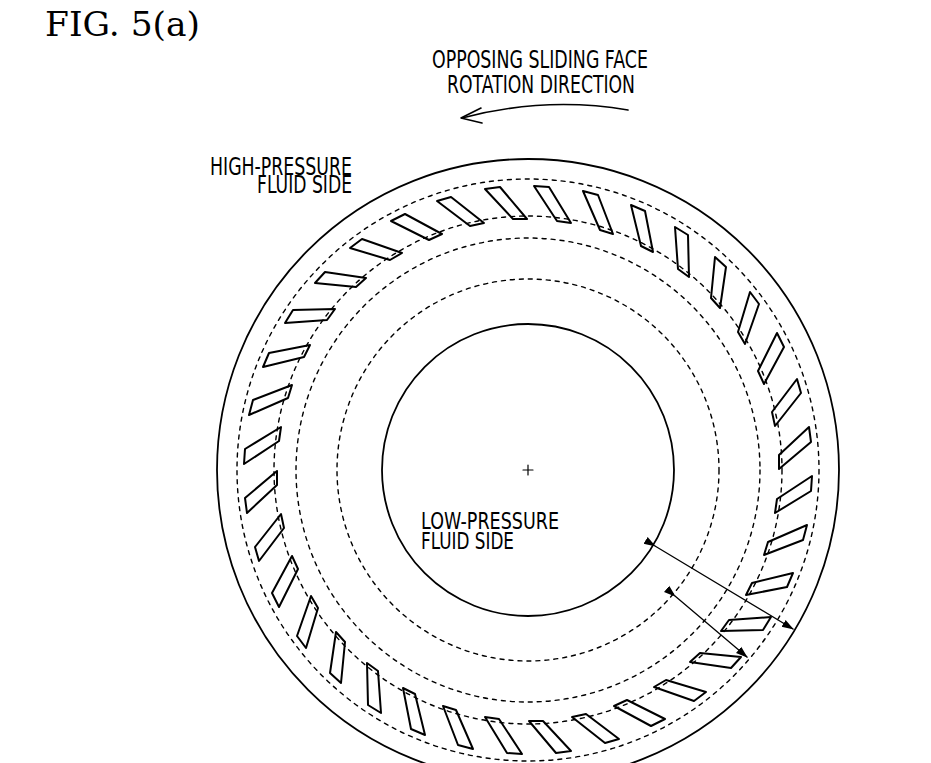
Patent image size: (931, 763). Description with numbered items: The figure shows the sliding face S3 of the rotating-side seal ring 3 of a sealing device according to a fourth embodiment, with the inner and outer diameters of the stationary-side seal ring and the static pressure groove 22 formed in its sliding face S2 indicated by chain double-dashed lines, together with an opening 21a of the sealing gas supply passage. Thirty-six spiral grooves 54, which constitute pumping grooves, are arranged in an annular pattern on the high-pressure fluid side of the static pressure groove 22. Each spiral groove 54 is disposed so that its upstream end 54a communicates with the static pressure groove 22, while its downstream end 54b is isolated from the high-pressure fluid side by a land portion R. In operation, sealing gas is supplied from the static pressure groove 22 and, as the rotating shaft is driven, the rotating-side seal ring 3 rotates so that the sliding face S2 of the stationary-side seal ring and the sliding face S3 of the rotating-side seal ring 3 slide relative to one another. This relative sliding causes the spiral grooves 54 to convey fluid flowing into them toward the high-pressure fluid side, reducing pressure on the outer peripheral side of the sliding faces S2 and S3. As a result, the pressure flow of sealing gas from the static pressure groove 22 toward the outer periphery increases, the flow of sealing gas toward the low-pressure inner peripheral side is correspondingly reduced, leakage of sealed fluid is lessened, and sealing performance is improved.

The rotating-side seal ring 3 is at (680, 195).
The opening of sealing gas supply passage 21a is at (563, 219).
The static pressure groove 22 is at (708, 240).
The land portion R is at (444, 197).
The spiral groove 54 is at (493, 470).
The upstream end of spiral groove 54a is at (366, 277).
The downstream end of spiral groove 54b is at (322, 273).
The sliding face of rotating-side seal ring S3 is at (720, 585).
The sliding face of stationary-side seal ring S2 is at (757, 629).